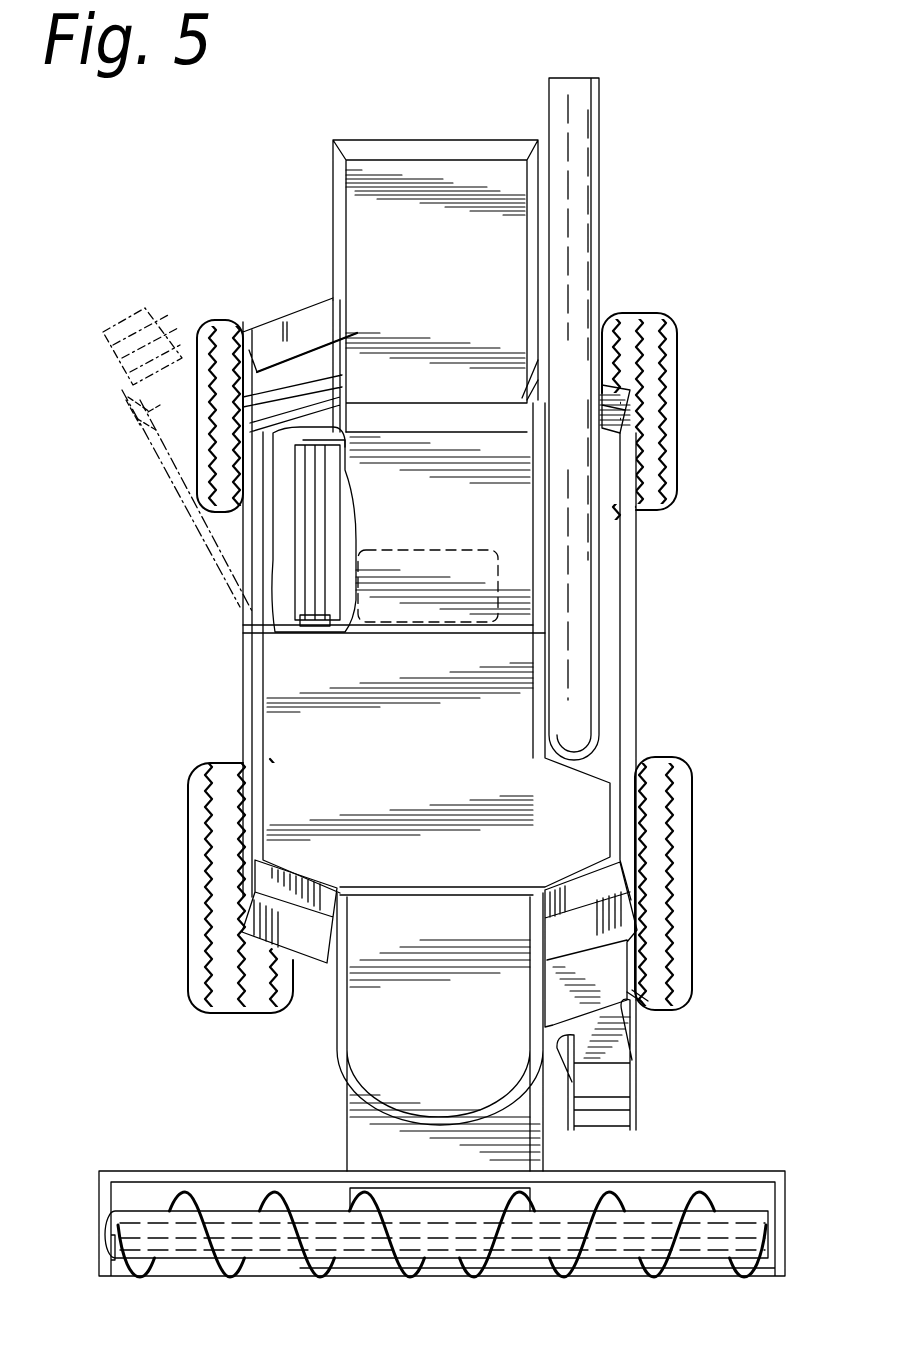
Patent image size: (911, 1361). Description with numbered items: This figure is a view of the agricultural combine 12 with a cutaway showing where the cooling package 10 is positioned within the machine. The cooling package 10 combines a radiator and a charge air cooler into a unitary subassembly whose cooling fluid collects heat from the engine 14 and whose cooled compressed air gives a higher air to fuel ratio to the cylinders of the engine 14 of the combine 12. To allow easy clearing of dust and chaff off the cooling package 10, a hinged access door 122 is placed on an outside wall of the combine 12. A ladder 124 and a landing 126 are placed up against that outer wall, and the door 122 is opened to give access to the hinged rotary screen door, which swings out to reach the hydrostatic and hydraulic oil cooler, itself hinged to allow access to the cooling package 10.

The cooling package 10 is at (243, 612).
The agricultural combine 12 is at (663, 655).
The engine 14 is at (432, 548).
The hinged access door 122 is at (180, 503).
The ladder 124 is at (126, 318).
The landing 126 is at (160, 412).